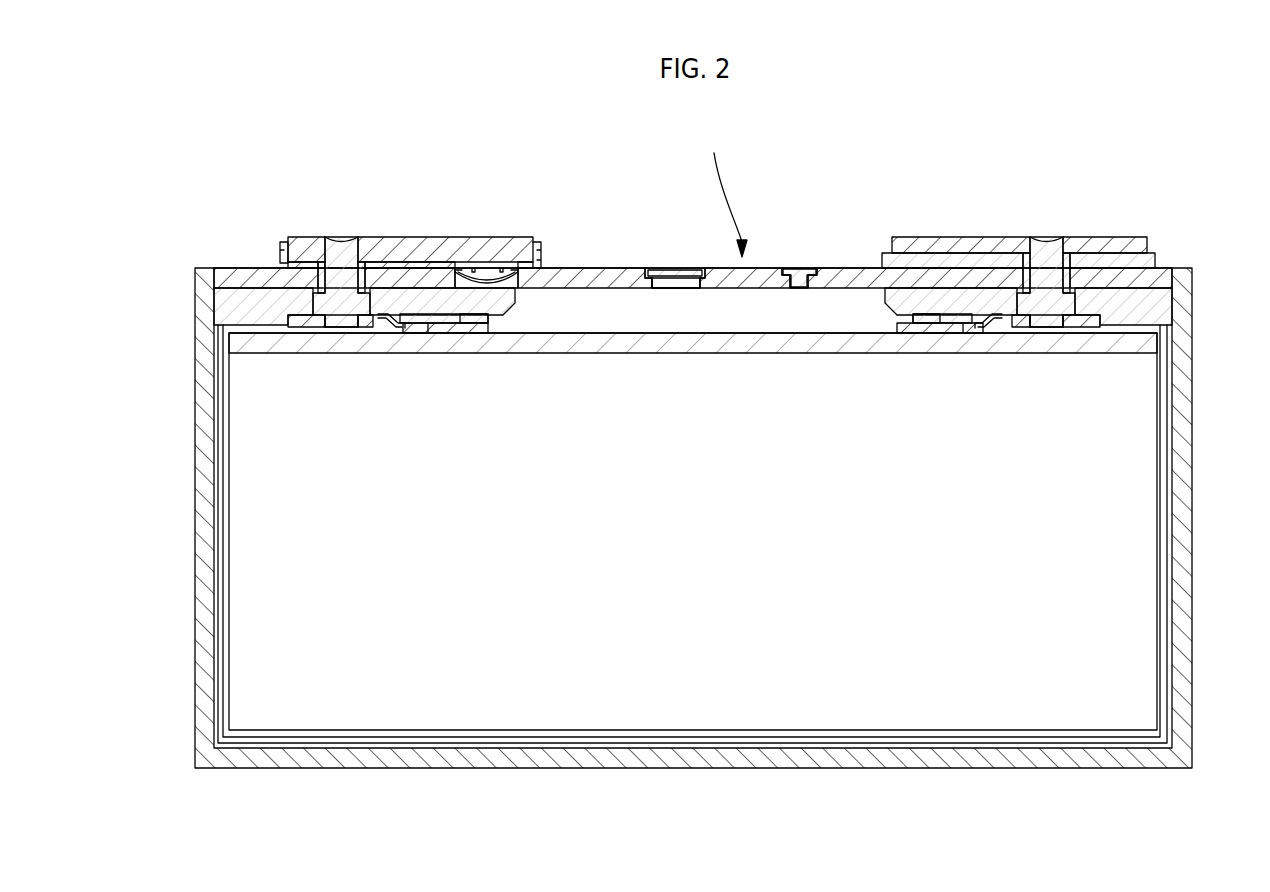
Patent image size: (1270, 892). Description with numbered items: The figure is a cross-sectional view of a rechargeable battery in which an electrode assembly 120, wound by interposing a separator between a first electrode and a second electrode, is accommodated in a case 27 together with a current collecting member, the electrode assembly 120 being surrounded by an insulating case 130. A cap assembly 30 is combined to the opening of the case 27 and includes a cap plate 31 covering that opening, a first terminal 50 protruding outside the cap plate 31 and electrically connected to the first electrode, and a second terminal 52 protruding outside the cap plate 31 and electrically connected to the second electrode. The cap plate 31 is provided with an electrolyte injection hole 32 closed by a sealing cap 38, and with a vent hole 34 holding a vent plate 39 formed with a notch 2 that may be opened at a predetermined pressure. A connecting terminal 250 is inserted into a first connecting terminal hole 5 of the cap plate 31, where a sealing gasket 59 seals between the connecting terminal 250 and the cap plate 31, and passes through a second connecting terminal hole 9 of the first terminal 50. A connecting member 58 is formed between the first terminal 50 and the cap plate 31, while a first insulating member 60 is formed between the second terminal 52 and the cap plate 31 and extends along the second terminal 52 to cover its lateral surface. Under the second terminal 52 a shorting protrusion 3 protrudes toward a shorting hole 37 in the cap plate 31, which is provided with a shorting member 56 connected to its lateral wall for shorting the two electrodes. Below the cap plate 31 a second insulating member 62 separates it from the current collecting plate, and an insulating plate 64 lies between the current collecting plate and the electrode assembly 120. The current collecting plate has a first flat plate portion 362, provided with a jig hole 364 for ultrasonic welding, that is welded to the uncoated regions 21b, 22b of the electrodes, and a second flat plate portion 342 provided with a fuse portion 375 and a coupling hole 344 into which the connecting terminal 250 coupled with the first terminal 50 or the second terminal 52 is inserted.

The notch 2 is at (660, 270).
The shorting protrusion 3 is at (500, 268).
The first connecting terminal hole 5 is at (310, 290).
The second connecting terminal hole 9 is at (345, 238).
The uncoated region 21b is at (930, 333).
The uncoated region 22b is at (448, 330).
The case 27 is at (1185, 468).
The cap assembly 30 is at (724, 191).
The cap plate 31 is at (580, 278).
The electrolyte injection hole 32 is at (795, 280).
The vent hole 34 is at (672, 284).
The shorting hole 37 is at (487, 282).
The sealing cap 38 is at (803, 272).
The vent plate 39 is at (675, 271).
The first terminal 50 is at (1130, 243).
The second terminal 52 is at (415, 250).
The shorting member 56 is at (487, 272).
The connecting member 58 is at (1167, 260).
The sealing gasket 59 is at (295, 264).
The first insulating member 60 is at (537, 252).
The second insulating member 62 is at (216, 298).
The insulating plate 64 is at (600, 345).
The electrode assembly 120 is at (645, 700).
The insulating case 130 is at (1165, 545).
The connecting terminal 250 is at (342, 238).
The second flat plate portion 342 is at (305, 322).
The coupling hole 344 is at (345, 320).
The first flat plate portion 362 is at (480, 325).
The jig hole 364 is at (430, 320).
The fuse portion 375 is at (392, 318).